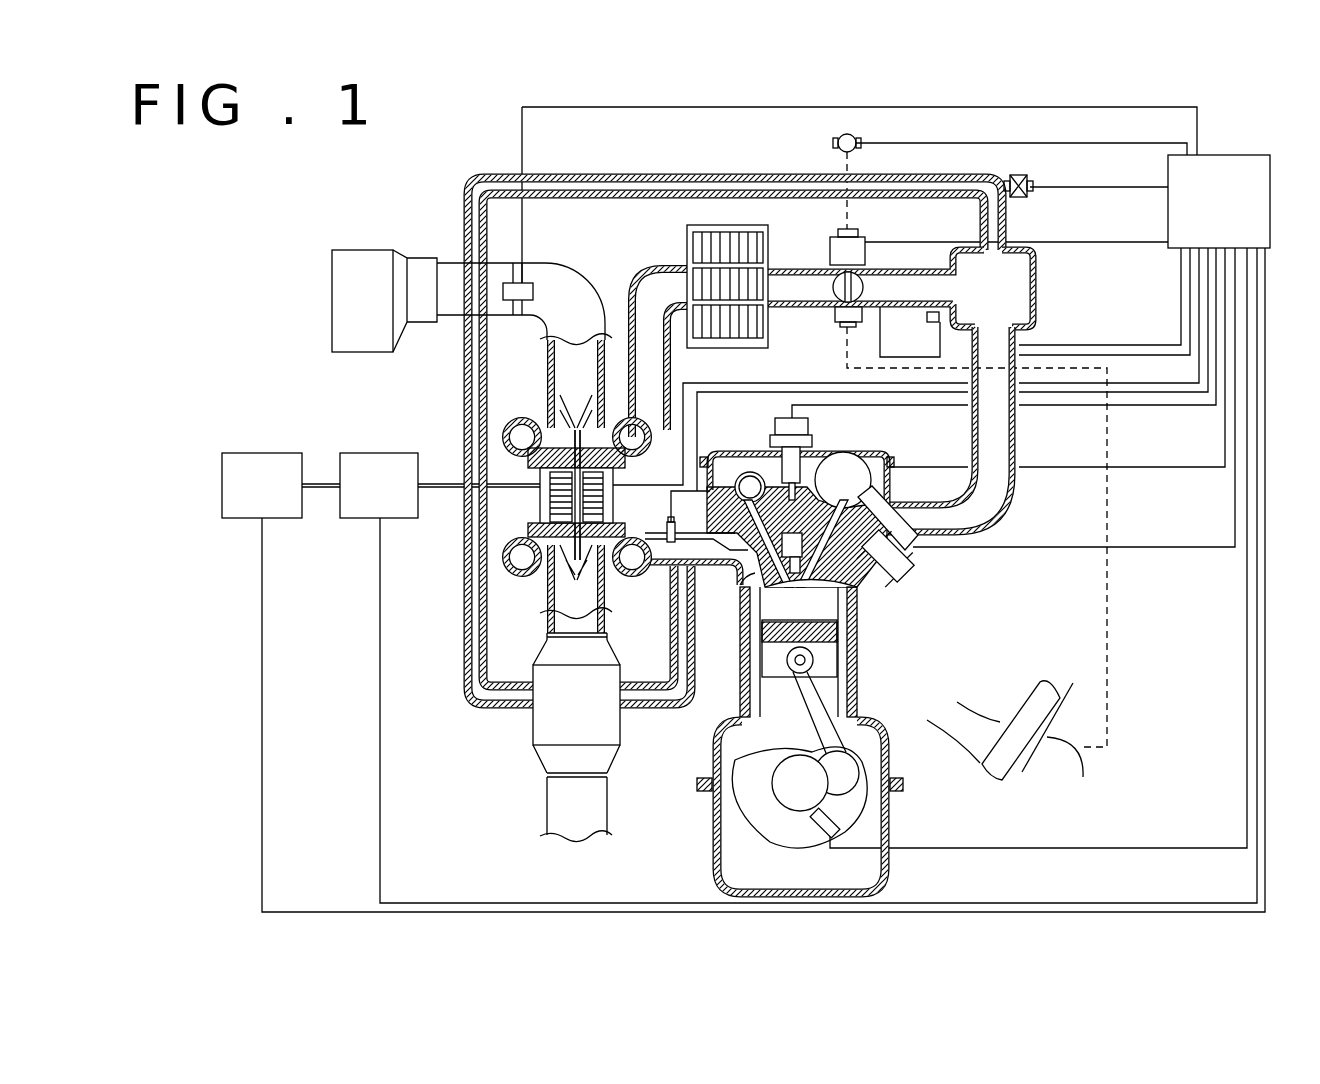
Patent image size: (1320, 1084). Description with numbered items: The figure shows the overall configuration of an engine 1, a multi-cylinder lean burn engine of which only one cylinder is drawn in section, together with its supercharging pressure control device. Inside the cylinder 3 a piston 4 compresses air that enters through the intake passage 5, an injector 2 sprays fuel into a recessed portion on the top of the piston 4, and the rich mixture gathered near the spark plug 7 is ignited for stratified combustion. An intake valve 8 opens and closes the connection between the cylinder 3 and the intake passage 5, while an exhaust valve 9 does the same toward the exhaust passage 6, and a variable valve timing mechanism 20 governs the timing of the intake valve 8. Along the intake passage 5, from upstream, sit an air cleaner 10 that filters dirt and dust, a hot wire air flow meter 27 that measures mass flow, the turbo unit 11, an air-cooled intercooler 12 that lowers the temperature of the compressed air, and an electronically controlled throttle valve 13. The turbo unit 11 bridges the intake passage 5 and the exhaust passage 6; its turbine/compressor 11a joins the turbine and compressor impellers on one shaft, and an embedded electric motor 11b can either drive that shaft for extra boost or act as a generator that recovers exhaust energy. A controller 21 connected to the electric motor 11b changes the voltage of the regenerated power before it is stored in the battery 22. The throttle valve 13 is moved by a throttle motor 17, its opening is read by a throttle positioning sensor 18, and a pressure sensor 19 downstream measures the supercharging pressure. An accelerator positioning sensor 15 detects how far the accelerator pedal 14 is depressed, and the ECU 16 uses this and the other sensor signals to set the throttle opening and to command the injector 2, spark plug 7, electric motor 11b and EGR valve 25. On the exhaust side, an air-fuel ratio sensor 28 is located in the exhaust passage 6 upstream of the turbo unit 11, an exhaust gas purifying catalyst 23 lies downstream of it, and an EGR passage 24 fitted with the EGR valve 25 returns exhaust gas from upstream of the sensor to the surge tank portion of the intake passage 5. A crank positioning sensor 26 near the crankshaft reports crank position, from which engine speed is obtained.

The engine 1 is at (849, 648).
The injector 2 is at (870, 562).
The cylinder 3 is at (770, 612).
The piston 4 is at (826, 663).
The intake passage 5 is at (988, 497).
The exhaust passage 6 is at (668, 563).
The spark plug 7 is at (806, 452).
The intake valve 8 is at (848, 641).
The exhaust valve 9 is at (735, 576).
The air cleaner 10 is at (364, 357).
The turbo unit 11 is at (522, 486).
The turbine/compressor 11a is at (528, 535).
The electric motor 11b is at (508, 428).
The intercooler 12 is at (720, 346).
The throttle valve 13 is at (838, 282).
The accelerator pedal 14 is at (1047, 752).
The accelerator positioning sensor 15 is at (840, 316).
The ECU 16 is at (1212, 172).
The throttle motor 17 is at (850, 249).
The throttle positioning sensor 18 is at (855, 139).
The pressure sensor 19 is at (925, 318).
The variable valve timing mechanism 20 is at (852, 471).
The controller 21 is at (360, 522).
The battery 22 is at (252, 522).
The exhaust gas purifying catalyst 23 is at (547, 724).
The EGR passage 24 is at (626, 182).
The EGR valve 25 is at (1028, 180).
The crank positioning sensor 26 is at (832, 818).
The air flow meter 27 is at (532, 284).
The air-fuel ratio sensor 28 is at (666, 527).